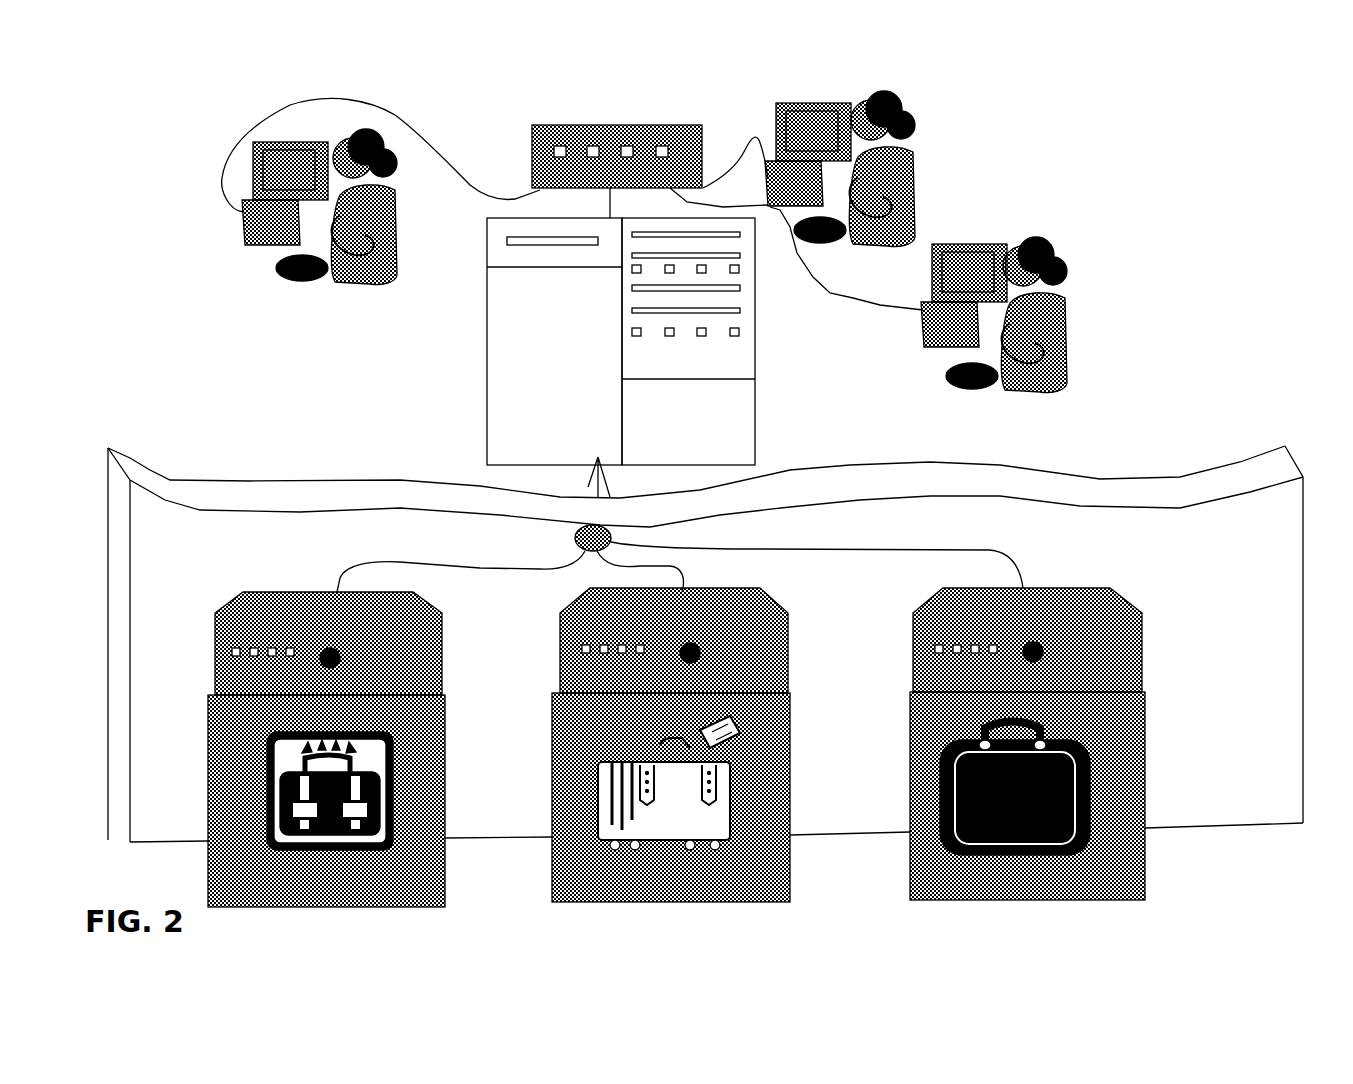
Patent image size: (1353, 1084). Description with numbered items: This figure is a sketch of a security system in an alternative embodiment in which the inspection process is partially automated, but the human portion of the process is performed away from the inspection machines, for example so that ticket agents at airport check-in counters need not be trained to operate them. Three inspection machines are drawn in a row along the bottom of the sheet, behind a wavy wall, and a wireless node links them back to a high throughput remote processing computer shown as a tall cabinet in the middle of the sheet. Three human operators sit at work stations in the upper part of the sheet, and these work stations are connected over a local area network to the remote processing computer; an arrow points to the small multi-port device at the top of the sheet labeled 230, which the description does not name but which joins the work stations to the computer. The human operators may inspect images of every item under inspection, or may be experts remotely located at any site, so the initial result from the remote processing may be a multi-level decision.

The network 230 is at (497, 145).